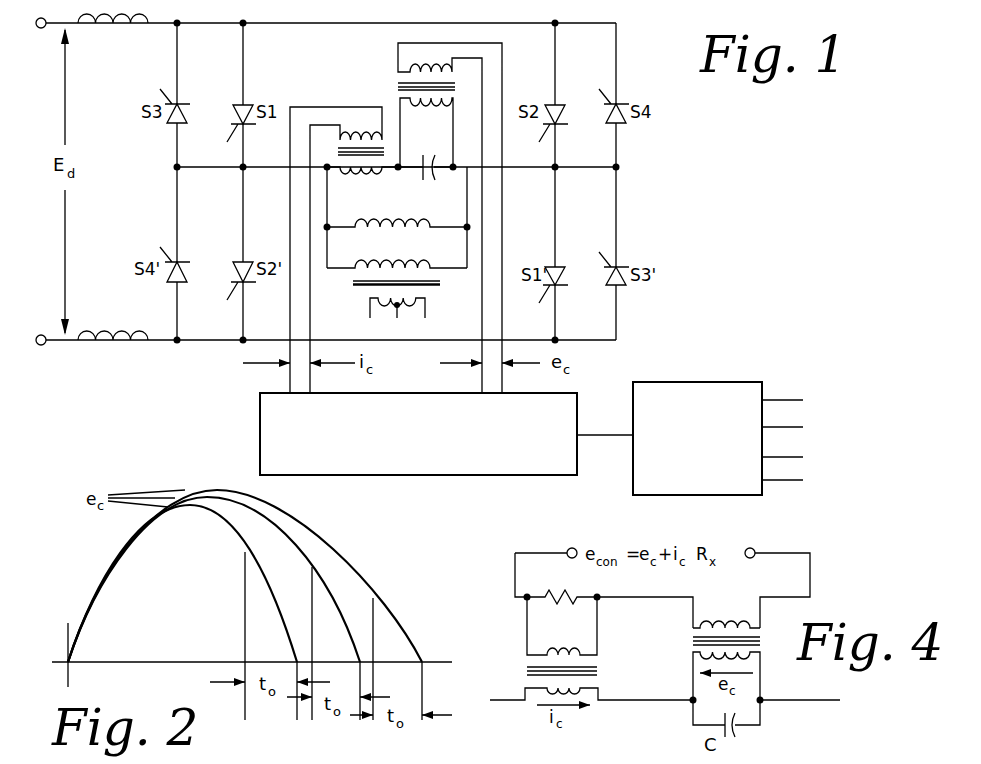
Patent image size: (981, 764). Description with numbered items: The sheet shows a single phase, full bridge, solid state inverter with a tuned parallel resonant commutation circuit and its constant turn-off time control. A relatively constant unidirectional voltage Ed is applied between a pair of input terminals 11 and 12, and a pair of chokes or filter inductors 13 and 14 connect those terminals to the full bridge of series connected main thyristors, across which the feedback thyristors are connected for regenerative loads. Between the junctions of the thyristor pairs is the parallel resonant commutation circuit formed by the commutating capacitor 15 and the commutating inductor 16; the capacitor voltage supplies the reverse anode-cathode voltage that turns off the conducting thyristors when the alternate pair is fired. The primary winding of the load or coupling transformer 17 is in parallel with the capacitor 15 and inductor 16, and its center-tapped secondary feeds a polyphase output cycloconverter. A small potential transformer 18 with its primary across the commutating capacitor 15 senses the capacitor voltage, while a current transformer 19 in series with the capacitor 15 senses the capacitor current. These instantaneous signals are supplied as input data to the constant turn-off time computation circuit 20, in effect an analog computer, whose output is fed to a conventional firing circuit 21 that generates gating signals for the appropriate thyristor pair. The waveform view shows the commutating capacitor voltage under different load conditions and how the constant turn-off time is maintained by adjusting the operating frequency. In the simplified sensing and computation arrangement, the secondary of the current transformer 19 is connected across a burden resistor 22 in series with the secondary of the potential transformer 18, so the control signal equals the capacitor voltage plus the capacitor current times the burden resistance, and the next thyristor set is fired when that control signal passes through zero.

In FIG. 1, the input terminal 11 is at (40, 29).
In FIG. 1, the input terminal 12 is at (41, 334).
In FIG. 1, the filter inductor 13 is at (114, 26).
In FIG. 1, the filter inductor 14 is at (136, 331).
In FIG. 1, the commutating capacitor 15 is at (417, 172).
In FIG. 1, the commutating inductor 16 is at (433, 222).
In FIG. 1, the coupling transformer 17 is at (407, 266).
In FIG. 1, the potential transformer 18 is at (398, 85).
In FIG. 4, the potential transformer 18 is at (690, 641).
In FIG. 1, the current transformer 19 is at (360, 176).
In FIG. 4, the current transformer 19 is at (563, 650).
In FIG. 1, the constant turn-off time computation circuit 20 is at (260, 418).
In FIG. 1, the firing circuit 21 is at (688, 383).
In FIG. 4, the burden resistor 22 is at (560, 590).